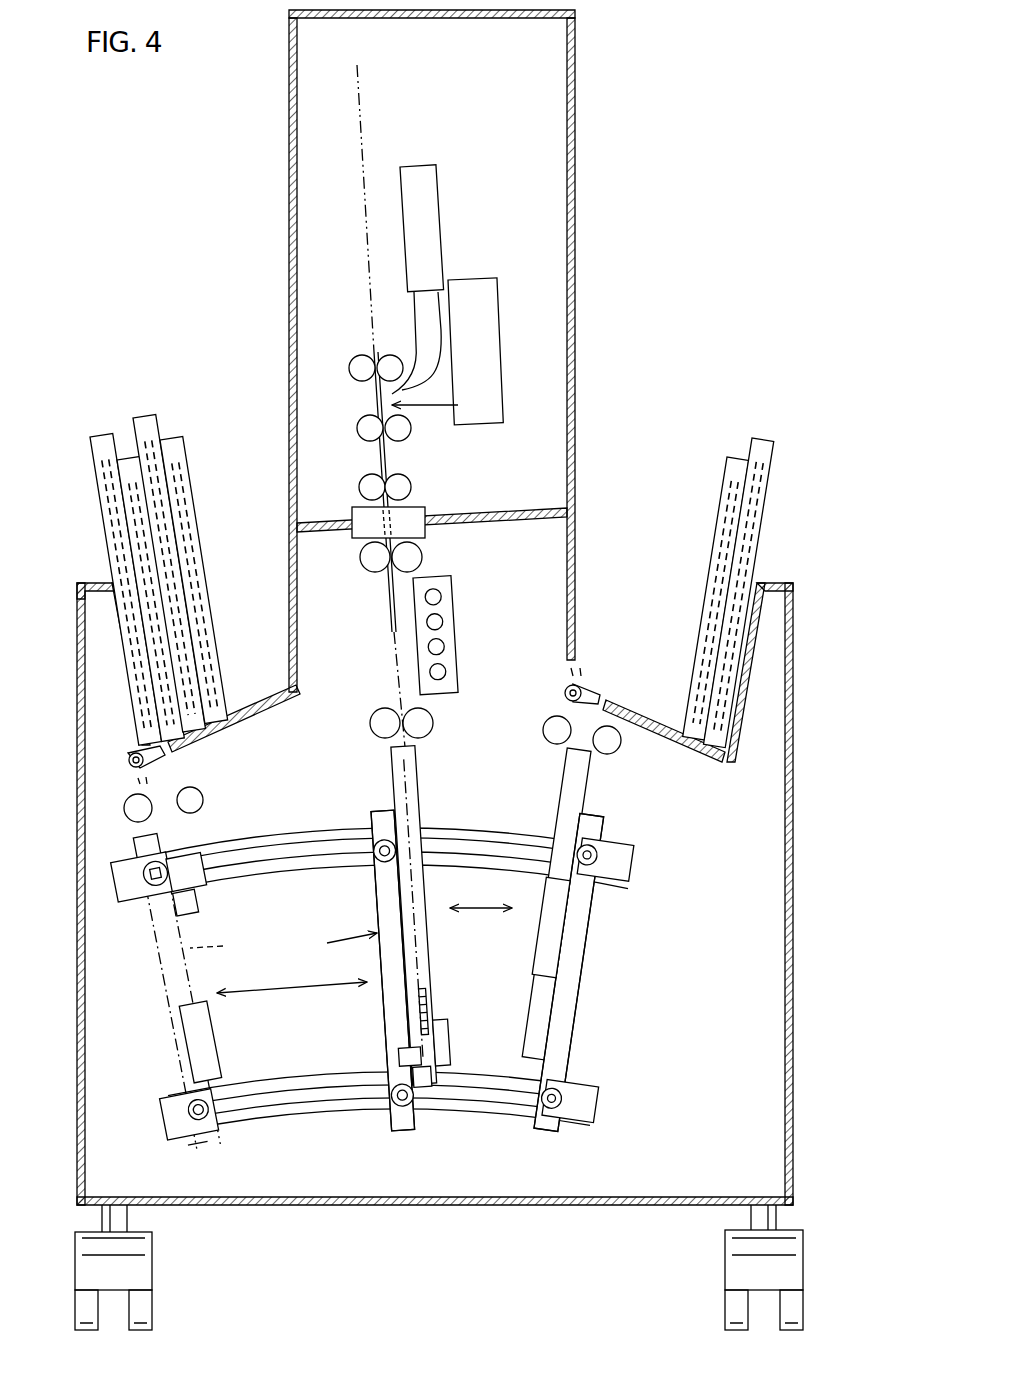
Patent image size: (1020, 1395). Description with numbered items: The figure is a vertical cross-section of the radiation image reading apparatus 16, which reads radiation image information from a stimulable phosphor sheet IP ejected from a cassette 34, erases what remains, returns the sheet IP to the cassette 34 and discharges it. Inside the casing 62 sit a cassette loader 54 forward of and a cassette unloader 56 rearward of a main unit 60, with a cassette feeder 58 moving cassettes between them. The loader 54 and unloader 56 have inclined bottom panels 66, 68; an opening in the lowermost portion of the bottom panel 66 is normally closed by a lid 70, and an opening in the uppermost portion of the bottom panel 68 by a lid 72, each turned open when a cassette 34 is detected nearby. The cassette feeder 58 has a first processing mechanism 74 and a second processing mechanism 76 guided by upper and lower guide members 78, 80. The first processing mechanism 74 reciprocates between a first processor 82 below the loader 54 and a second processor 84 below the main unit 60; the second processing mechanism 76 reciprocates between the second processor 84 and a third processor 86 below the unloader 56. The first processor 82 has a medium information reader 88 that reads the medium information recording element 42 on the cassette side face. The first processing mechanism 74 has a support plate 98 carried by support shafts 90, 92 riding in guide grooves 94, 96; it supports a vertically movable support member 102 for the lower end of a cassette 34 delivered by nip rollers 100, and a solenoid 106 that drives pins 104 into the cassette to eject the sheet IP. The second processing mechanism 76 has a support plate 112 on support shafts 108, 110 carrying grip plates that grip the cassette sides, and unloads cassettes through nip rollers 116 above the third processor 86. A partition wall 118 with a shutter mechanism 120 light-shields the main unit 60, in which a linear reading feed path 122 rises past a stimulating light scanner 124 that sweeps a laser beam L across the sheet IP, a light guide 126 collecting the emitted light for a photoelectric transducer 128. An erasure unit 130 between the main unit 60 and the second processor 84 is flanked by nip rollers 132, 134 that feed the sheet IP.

The radiation image reading apparatus 16 is at (692, 98).
The main unit 60 is at (520, 211).
The casing 62 is at (793, 1036).
The cassette loader 54 is at (112, 690).
The cassette unloader 56 is at (762, 707).
The cassette feeder 58 is at (414, 1148).
The bottom panel 66 is at (268, 695).
The bottom panel 68 is at (646, 713).
The lid 70 is at (160, 757).
The lid 72 is at (582, 688).
The first processing mechanism 74 is at (309, 990).
The second processing mechanism 76 is at (597, 915).
The upper guide member 78 is at (340, 840).
The lower guide member 80 is at (308, 1115).
The first processor 82 is at (158, 1030).
The second processor 84 is at (368, 913).
The third processor 86 is at (582, 1032).
The medium information reader 88 is at (205, 1040).
The support shaft 90 is at (416, 836).
The support shaft 92 is at (386, 1127).
The guide groove 94 is at (264, 847).
The guide groove 96 is at (281, 1097).
The support plate 98 is at (393, 1041).
The nip rollers 100 is at (194, 797).
The support member 102 is at (446, 1046).
The pins 104 is at (407, 1050).
The solenoid 106 is at (426, 1098).
The support shaft 108 is at (600, 856).
The support shaft 110 is at (560, 1120).
The support plate 112 is at (576, 977).
The nip rollers 116 is at (607, 748).
The partition wall 118 is at (541, 515).
The shutter mechanism 120 is at (372, 525).
The linear reading feed path 122 is at (362, 398).
The stimulating light scanner 124 is at (476, 292).
The light guide 126 is at (428, 320).
The photoelectric transducer 128 is at (420, 180).
The erasure unit 130 is at (448, 633).
The nip rollers 132 is at (370, 566).
The nip rollers 134 is at (425, 723).
The cassette 34 is at (132, 452).
The medium information recording element 42 is at (430, 1005).
The stimulable phosphor sheet IP is at (388, 460).
The stimulating light beam L is at (449, 406).